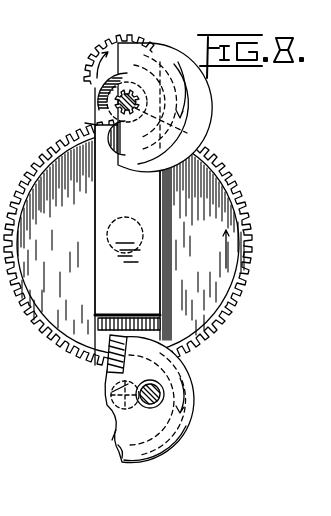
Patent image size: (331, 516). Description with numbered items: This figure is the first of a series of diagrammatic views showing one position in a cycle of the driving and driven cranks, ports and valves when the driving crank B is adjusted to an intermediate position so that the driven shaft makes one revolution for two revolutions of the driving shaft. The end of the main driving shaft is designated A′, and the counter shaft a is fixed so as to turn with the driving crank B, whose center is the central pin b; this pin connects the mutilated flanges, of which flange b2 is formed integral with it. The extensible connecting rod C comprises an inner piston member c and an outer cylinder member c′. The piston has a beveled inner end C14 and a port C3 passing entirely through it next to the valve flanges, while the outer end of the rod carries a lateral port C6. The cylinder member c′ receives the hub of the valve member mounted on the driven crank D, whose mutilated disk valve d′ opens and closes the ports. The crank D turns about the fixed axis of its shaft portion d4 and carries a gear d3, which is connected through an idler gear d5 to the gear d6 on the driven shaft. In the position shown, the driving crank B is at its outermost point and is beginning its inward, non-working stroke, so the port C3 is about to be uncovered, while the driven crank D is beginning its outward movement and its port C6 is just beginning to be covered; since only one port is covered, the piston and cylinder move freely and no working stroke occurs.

The gear d3 is at (103, 45).
The mutilated disk valve d′ is at (134, 43).
The shaft portion d4 is at (134, 72).
The crank D is at (100, 92).
The lateral port C6 is at (97, 125).
The idler gear d5 is at (247, 205).
The cylinder member c′ is at (97, 196).
The extensible connecting rod C is at (98, 232).
The piston member c is at (98, 324).
The port C3 is at (108, 362).
The beveled inner end C14 is at (112, 392).
The central pin b is at (114, 399).
The driving crank B is at (105, 405).
The gear d6 is at (118, 445).
The end of main driving shaft A′ is at (112, 440).
The counter shaft a is at (164, 399).
The flange b2 is at (172, 430).